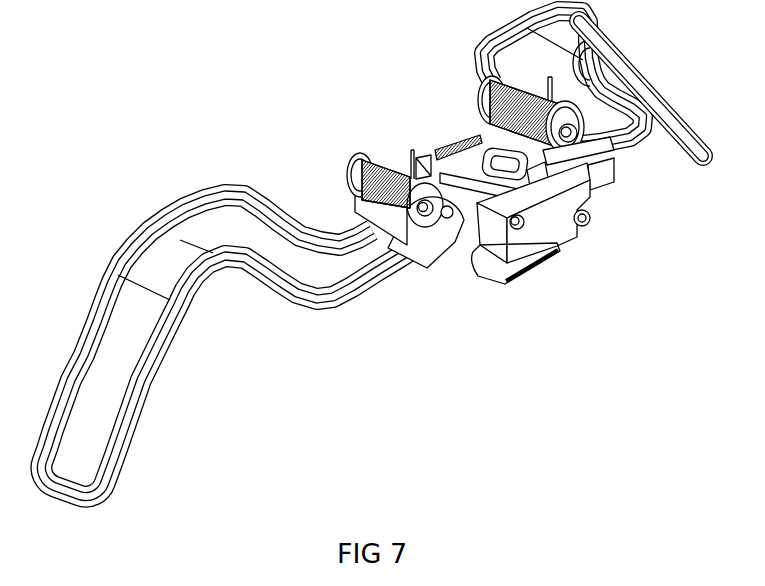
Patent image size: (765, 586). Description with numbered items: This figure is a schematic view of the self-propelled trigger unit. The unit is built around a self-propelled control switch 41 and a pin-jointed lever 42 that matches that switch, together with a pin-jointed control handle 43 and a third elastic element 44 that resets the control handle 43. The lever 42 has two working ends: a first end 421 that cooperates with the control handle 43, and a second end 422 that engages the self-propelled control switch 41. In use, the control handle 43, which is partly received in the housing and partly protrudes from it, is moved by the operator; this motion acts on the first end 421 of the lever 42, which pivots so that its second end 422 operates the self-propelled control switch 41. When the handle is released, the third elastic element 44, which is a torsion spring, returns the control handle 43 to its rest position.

The self-propelled control switch 41 is at (547, 223).
The lever 42 is at (450, 143).
The first end 421 is at (485, 128).
The second end 422 is at (517, 277).
The control handle 43 is at (340, 258).
The third elastic element 44 is at (365, 158).